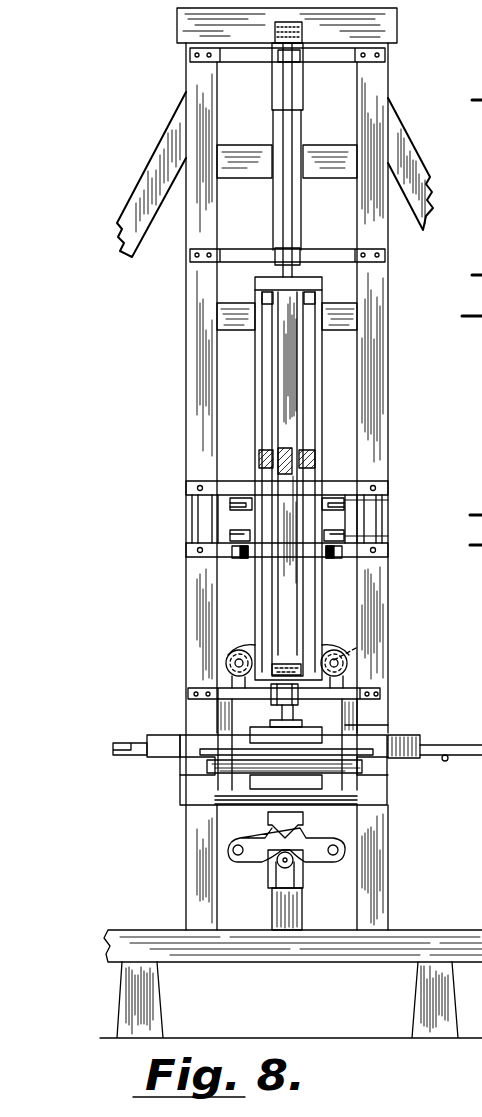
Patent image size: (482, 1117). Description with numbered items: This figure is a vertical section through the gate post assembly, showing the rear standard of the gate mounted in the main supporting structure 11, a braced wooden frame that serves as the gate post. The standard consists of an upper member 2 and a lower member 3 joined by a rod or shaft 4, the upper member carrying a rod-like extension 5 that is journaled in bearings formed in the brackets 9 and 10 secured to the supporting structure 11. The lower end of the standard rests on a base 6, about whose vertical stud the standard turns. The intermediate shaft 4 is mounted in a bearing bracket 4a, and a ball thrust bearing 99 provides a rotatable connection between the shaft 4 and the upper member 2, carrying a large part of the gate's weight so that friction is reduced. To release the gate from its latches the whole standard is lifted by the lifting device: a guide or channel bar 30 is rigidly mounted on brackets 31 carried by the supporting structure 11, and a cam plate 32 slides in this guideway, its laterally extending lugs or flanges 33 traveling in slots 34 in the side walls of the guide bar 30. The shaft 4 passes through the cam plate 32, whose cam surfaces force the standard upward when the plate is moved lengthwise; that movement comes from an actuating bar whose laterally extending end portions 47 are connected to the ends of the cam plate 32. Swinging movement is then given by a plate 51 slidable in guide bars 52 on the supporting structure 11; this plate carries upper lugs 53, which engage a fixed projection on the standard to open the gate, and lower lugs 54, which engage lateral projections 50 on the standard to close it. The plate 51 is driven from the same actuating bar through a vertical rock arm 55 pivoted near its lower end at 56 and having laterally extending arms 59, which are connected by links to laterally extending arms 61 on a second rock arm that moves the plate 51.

The upper member of standard 2 is at (290, 408).
The lower member of standard 3 is at (268, 824).
The rod or shaft 4 is at (387, 710).
The bearing bracket 4a is at (243, 750).
The extension 5 is at (294, 219).
The base 6 is at (388, 725).
The bracket 9 is at (300, 62).
The bracket 10 is at (278, 256).
The main supporting structure 11 is at (378, 290).
The guide or channel bar 30 is at (392, 775).
The brackets 31 is at (195, 787).
The cam plate 32 is at (150, 741).
The lugs or flanges 33 is at (247, 737).
The slots 34 is at (210, 760).
The end portions 47 is at (120, 757).
The lateral projections 50 is at (240, 560).
The plate 51 is at (340, 522).
The guide bars 52 is at (352, 485).
The upper lugs 53 is at (240, 500).
The lower lugs 54 is at (230, 535).
The rock arm 55 is at (305, 860).
The pivot 56 is at (280, 900).
The laterally extending arms 59 is at (260, 868).
The laterally extending arms 61 is at (240, 650).
The ball thrust bearing 99 is at (356, 648).